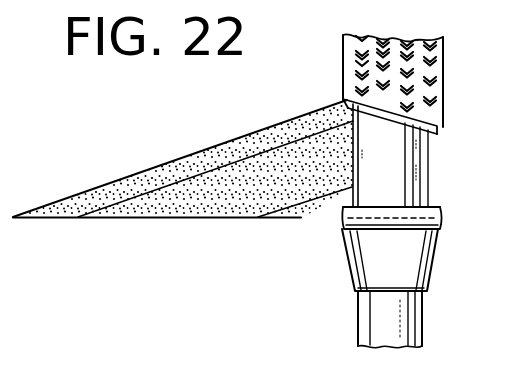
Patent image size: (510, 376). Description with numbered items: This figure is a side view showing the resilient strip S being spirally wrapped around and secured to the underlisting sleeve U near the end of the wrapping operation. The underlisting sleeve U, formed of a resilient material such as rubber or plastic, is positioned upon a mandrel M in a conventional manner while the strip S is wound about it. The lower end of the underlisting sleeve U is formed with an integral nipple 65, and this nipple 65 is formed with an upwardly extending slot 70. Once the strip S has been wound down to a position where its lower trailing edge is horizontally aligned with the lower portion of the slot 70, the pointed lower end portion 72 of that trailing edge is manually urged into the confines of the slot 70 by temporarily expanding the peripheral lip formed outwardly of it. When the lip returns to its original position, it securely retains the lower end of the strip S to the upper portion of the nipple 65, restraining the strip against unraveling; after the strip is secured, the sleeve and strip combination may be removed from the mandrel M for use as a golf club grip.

The pointed lower end portion 72 is at (52, 212).
The resilient strip S is at (441, 52).
The underlisting sleeve U is at (414, 160).
The slot 70 is at (431, 211).
The nipple 65 is at (352, 254).
The mandrel M is at (366, 316).